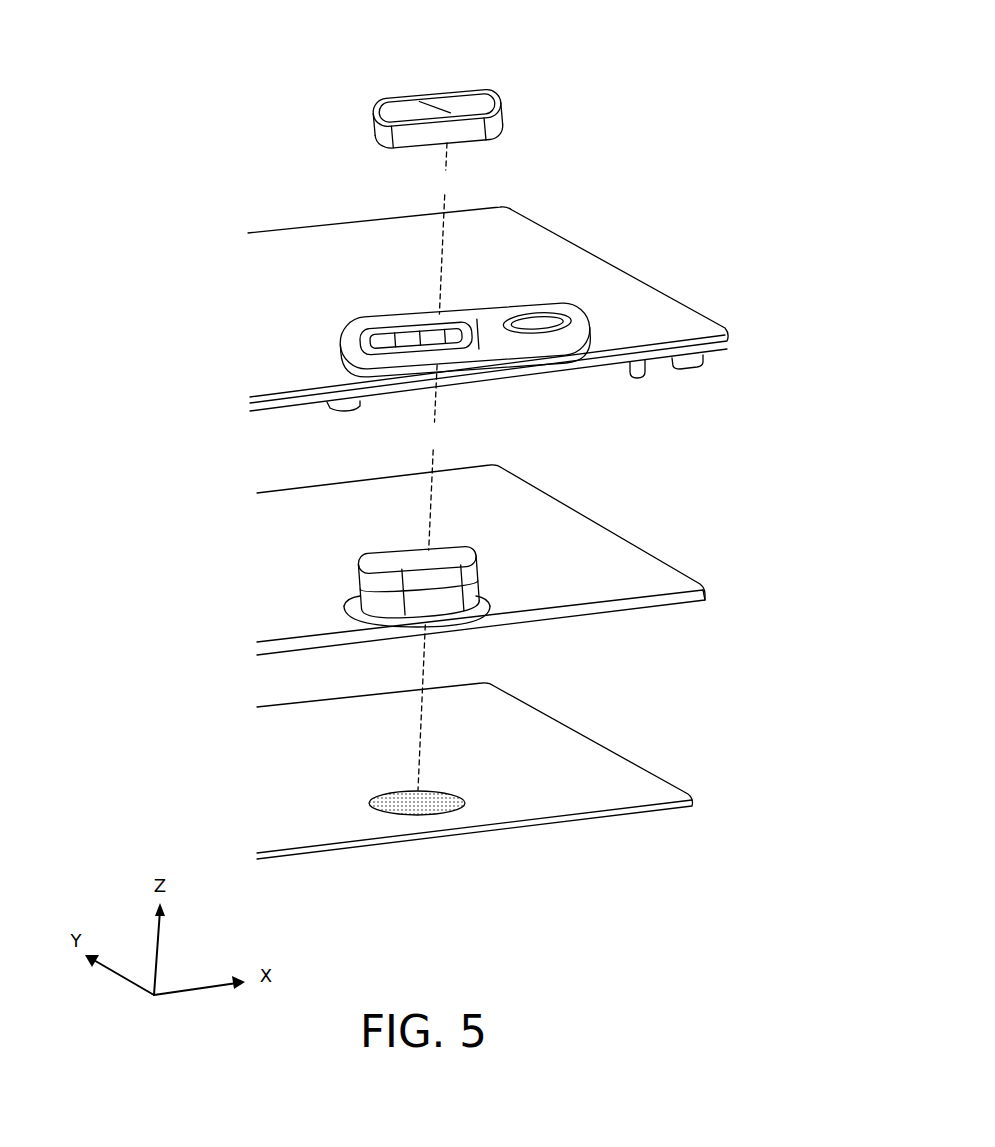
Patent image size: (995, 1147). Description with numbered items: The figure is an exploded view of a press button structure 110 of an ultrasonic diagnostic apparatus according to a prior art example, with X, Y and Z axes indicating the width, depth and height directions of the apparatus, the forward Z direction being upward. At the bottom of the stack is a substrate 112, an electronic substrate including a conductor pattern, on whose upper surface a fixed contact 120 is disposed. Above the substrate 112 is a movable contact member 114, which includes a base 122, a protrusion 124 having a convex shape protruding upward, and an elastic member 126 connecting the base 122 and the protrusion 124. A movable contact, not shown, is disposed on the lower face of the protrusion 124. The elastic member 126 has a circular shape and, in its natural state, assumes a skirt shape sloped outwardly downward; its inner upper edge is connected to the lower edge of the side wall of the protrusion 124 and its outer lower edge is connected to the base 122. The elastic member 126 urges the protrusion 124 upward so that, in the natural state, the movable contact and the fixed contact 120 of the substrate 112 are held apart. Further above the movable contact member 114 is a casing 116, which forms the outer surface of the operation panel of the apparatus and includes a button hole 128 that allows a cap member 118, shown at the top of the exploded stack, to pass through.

The press button structure 110 is at (270, 82).
The substrate 112 is at (637, 730).
The movable contact member 114 is at (637, 493).
The casing 116 is at (636, 250).
The cap member 118 is at (516, 112).
The fixed contact 120 is at (387, 802).
The base 122 is at (527, 533).
The protrusion 124 is at (338, 577).
The elastic member 126 is at (360, 610).
The button hole 128 is at (389, 312).